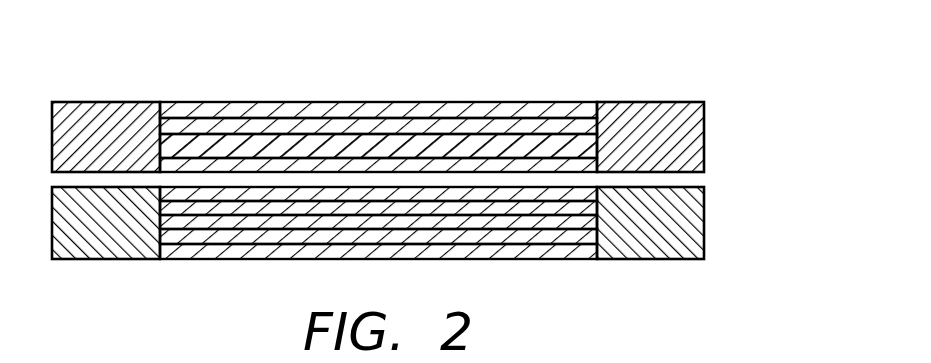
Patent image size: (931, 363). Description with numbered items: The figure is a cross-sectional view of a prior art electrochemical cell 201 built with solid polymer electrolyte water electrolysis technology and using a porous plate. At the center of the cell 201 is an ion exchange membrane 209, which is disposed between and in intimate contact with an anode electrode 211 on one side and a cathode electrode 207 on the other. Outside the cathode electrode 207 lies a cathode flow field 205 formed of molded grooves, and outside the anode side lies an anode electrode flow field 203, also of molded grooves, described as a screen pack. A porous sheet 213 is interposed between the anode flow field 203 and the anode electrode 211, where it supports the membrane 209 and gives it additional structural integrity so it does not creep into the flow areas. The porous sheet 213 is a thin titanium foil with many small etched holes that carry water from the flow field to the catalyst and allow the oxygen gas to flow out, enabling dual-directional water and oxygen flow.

The semiconductor device assembly 201 is at (423, 167).
The anode electrode flow field 203 is at (211, 120).
The cathode flow field 205 is at (313, 237).
The cathode electrode 207 is at (345, 188).
The ion exchange membrane 209 is at (693, 182).
The anode electrode 211 is at (268, 156).
The porous sheet 213 is at (500, 140).